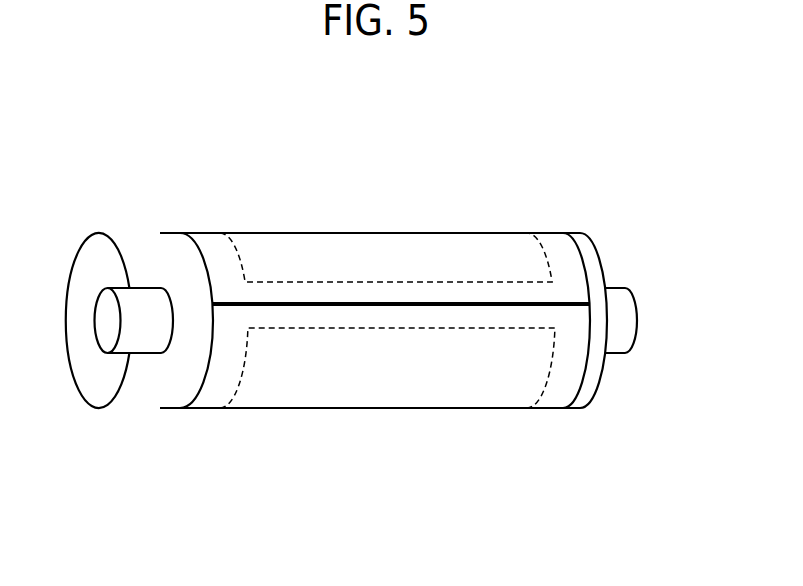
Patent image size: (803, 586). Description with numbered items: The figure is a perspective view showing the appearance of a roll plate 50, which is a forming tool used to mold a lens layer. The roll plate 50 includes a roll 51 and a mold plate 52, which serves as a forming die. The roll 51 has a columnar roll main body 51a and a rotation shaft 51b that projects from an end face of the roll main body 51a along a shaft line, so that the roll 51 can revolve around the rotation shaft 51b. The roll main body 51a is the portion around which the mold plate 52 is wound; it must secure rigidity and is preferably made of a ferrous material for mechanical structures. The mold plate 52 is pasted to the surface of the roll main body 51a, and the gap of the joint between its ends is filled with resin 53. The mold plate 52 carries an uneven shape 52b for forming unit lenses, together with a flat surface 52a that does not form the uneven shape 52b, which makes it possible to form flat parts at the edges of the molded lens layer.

The roll plate 50 is at (303, 152).
The roll 51 is at (105, 255).
The roll main body 51a is at (155, 255).
The rotation shaft 51b is at (102, 322).
The mold plate 52 is at (548, 233).
The flat surface 52a is at (222, 263).
The uneven shape 52b is at (435, 244).
The resin 53 is at (573, 303).